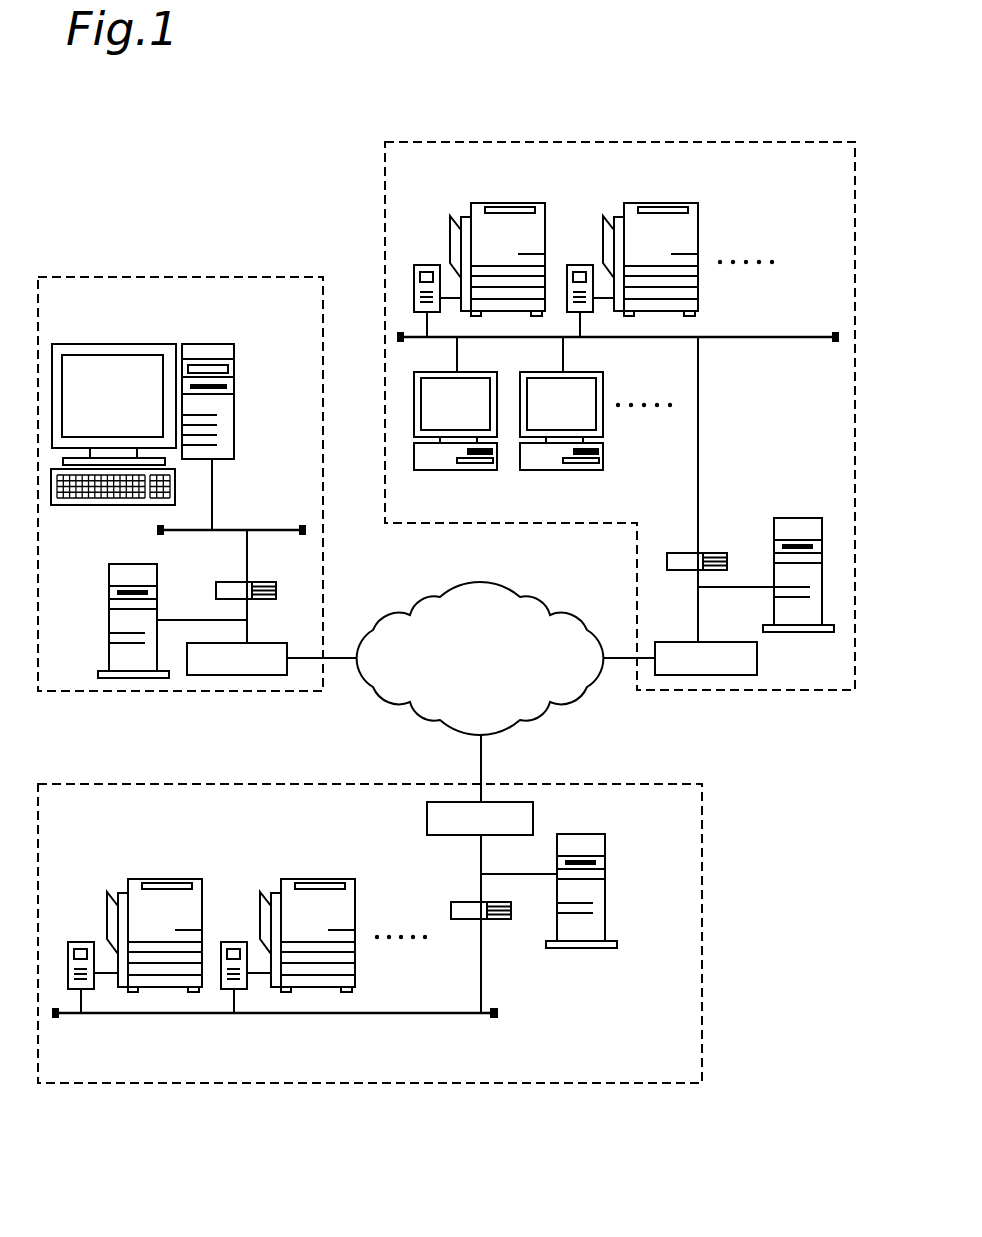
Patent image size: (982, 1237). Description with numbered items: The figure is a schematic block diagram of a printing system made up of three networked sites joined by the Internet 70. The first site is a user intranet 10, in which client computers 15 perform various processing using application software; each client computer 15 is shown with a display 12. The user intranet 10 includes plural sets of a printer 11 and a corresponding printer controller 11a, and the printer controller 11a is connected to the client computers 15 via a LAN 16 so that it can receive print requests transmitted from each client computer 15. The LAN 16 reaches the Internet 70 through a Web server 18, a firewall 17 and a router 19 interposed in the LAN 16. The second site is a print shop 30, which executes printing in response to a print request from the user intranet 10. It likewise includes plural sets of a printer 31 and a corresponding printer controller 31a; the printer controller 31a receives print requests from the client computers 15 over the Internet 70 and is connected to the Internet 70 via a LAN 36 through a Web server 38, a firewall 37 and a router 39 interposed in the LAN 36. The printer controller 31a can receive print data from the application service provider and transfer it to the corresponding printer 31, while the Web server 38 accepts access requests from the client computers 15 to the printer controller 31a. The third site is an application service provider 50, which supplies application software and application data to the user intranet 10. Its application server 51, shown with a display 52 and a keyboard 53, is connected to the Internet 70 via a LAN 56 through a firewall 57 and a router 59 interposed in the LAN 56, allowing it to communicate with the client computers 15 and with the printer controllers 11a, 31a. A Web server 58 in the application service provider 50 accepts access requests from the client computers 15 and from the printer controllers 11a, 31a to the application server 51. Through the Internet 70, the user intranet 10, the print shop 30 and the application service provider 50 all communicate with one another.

The user intranet 10 is at (705, 140).
The printer 11 is at (512, 201).
The printer controller 11a is at (428, 263).
The display 12 is at (476, 371).
The client computer 15 is at (455, 470).
The LAN 16 is at (778, 341).
The firewall 17 is at (680, 552).
The Web server 18 is at (800, 516).
The router 19 is at (757, 658).
The print shop 30 is at (425, 1086).
The printer 31 is at (166, 878).
The printer controller 31a is at (83, 940).
The LAN 36 is at (390, 1016).
The firewall 37 is at (465, 900).
The Web server 38 is at (602, 910).
The router 39 is at (533, 815).
The application service provider 50 is at (207, 275).
The application server 51 is at (210, 343).
The display 52 is at (116, 343).
The keyboard 53 is at (80, 505).
The LAN 56 is at (263, 527).
The firewall 57 is at (252, 582).
The Web server 58 is at (108, 647).
The router 59 is at (263, 642).
The Internet 70 is at (580, 614).